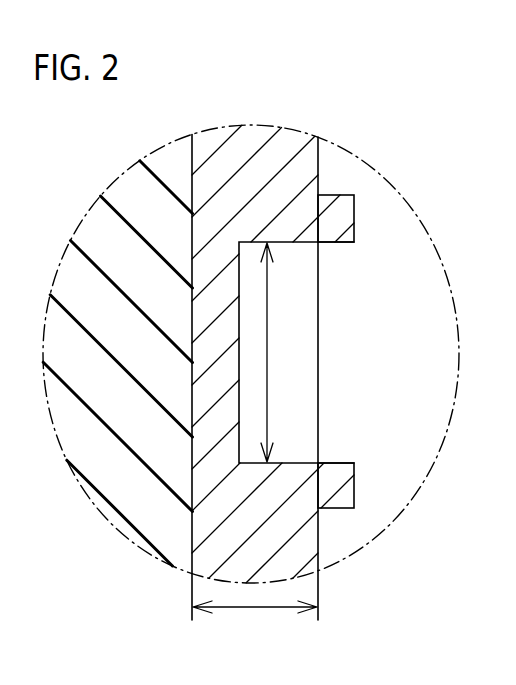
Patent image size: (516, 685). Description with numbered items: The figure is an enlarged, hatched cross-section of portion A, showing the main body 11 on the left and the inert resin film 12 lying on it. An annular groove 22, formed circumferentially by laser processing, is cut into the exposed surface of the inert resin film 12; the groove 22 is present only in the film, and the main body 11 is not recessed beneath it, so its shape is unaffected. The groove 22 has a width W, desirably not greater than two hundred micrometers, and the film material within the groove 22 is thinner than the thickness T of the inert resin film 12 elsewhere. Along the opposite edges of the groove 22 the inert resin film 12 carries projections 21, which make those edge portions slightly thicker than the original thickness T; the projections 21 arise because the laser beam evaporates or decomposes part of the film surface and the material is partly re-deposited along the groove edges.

The main body 11 is at (132, 202).
The inert resin film 12 is at (248, 145).
The projections 21 is at (343, 213).
The annular groove 22 is at (324, 368).
The portion A is at (345, 155).
The width of the groove W is at (268, 302).
The thickness of the inert resin film T is at (257, 610).